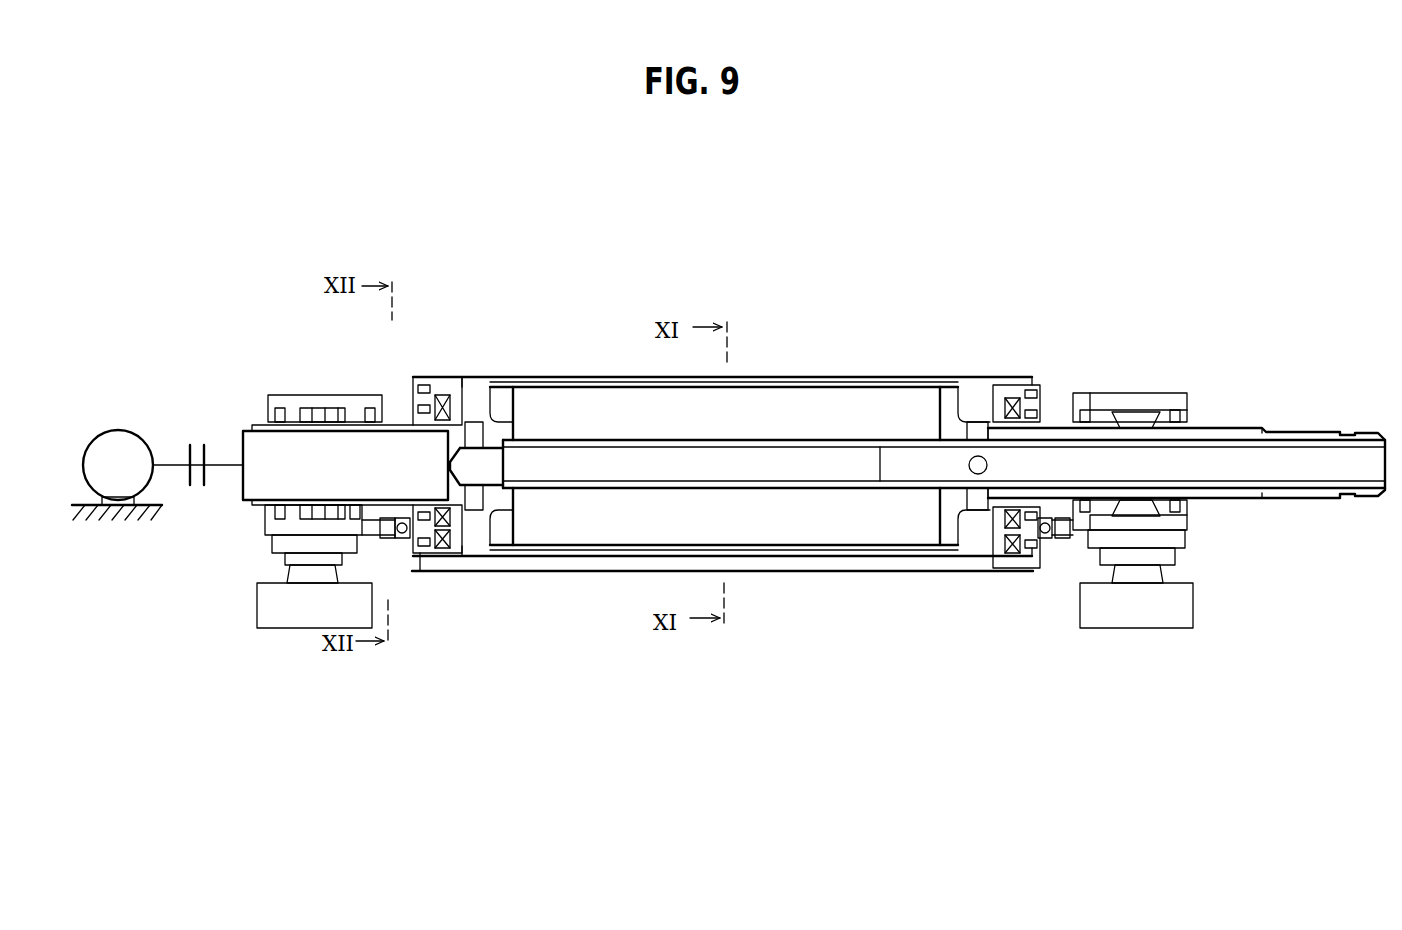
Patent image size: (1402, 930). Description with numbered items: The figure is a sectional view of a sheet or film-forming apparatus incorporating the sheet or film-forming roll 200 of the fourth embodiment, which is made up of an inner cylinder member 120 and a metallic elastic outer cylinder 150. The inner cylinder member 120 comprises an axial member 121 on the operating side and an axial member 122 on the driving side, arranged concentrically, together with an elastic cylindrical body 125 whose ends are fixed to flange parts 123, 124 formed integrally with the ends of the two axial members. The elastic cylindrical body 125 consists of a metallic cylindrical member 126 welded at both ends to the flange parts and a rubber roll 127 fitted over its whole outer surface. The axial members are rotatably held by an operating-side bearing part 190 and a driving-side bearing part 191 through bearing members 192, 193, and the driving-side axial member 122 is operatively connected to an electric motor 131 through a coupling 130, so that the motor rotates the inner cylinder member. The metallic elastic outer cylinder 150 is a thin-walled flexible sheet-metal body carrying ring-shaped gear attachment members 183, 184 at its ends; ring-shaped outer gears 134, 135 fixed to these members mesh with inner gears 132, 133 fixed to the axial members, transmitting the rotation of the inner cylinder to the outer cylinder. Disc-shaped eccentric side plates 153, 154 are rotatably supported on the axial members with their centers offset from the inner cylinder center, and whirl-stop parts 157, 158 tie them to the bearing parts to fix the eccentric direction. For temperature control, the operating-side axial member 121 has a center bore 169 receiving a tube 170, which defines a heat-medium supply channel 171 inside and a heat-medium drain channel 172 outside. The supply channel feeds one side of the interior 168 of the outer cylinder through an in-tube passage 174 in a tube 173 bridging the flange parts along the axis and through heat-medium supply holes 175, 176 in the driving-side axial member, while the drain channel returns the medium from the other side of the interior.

The electric motor 131 is at (125, 430).
The coupling 130 is at (198, 443).
The driving-side bearing part 191 is at (288, 397).
The bearing member 193 is at (340, 410).
The axial member 122 is at (393, 433).
The heat-medium supply hole 176 is at (470, 420).
The flange part 124 is at (497, 395).
The rubber roll 127 is at (768, 378).
The metallic cylindrical member 126 is at (822, 386).
The metallic elastic outer cylinder 150 is at (722, 422).
The flange part 123 is at (950, 385).
The inner cylinder member 120 is at (978, 402).
The axial member 121 is at (1052, 428).
The operating-side bearing part 190 is at (1136, 398).
The bearing member 192 is at (1150, 530).
The center bore 169 is at (1221, 455).
The heat-medium drain channel 172 is at (1280, 430).
The tube 170 is at (1320, 430).
The heat-medium supply channel 171 is at (1295, 470).
The in-tube passage 174 is at (610, 450).
The tube 173 is at (800, 442).
The heat-medium supply hole 175 is at (500, 462).
The sheet or film-forming roll 200 is at (940, 275).
The whirl-stop part 158 is at (386, 537).
The gear attachment member 184 is at (430, 553).
The inner gear 133 is at (462, 519).
The outer gear 135 is at (455, 537).
The eccentric side plate 154 is at (440, 552).
The elastic cylindrical body 125 is at (815, 571).
The interior 168 is at (880, 556).
The inner gear 132 is at (993, 520).
The outer gear 134 is at (995, 548).
The eccentric side plate 153 is at (1022, 550).
The whirl-stop part 157 is at (1058, 540).
The gear attachment member 183 is at (1035, 553).